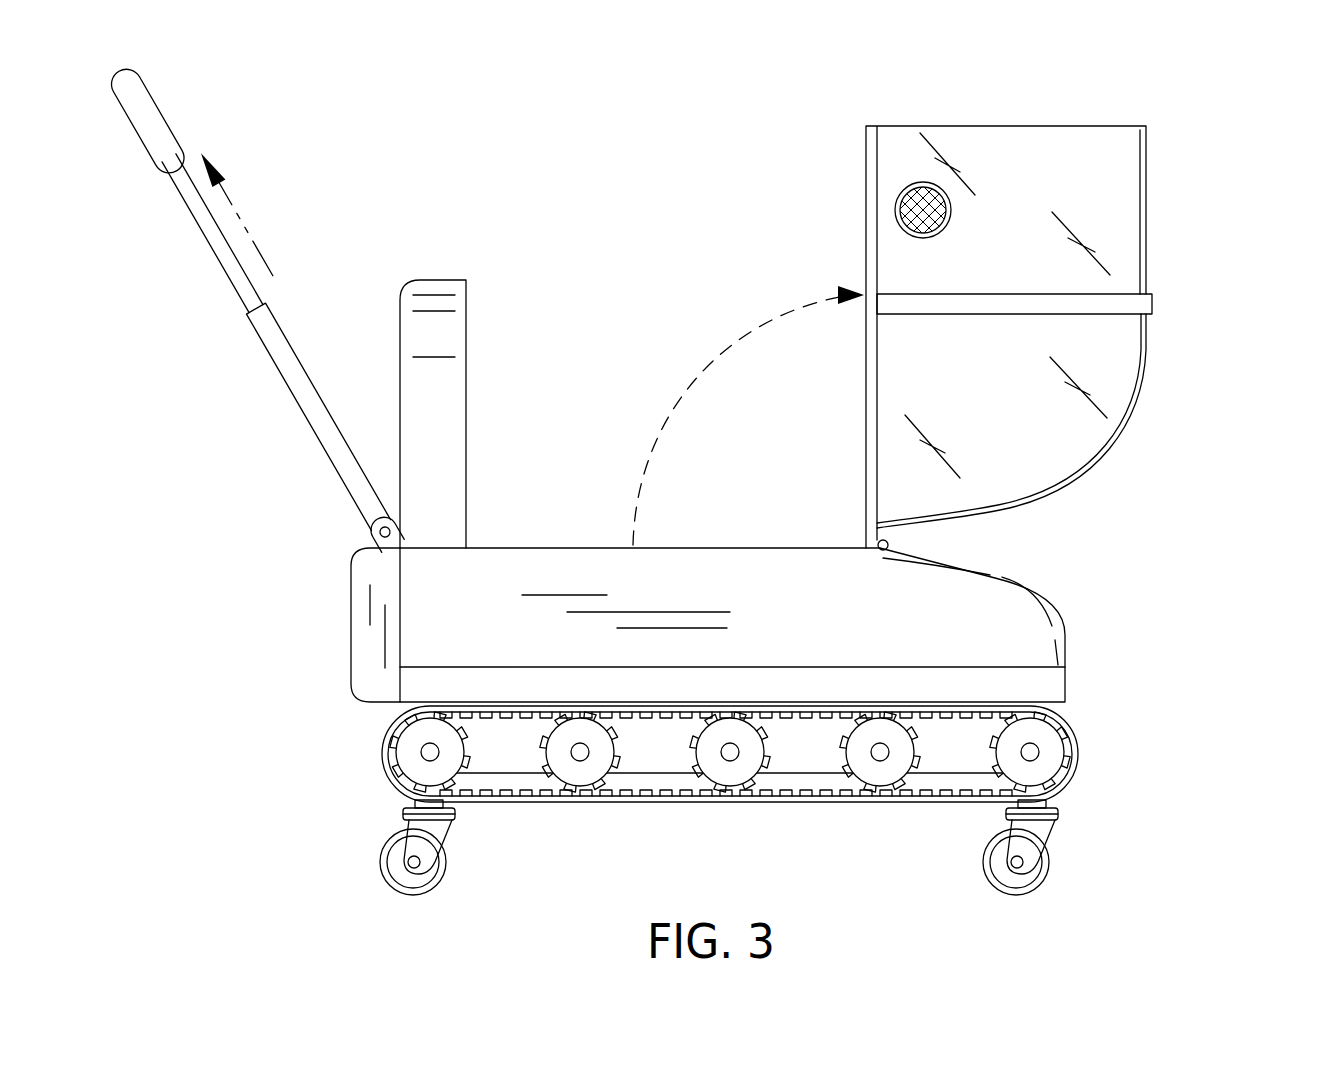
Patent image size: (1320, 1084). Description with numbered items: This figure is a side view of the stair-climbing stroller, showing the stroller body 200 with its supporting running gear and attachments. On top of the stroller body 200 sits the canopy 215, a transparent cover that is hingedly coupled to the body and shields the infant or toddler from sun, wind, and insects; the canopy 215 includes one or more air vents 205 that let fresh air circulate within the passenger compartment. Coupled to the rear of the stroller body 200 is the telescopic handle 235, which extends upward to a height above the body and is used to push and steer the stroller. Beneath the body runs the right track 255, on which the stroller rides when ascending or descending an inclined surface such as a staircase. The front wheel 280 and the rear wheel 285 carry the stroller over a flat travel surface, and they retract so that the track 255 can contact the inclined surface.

The stroller body 200 is at (1052, 589).
The air vent 205 is at (932, 205).
The canopy 215 is at (1113, 367).
The telescopic handle 235 is at (262, 330).
The right track 255 is at (384, 747).
The front wheel 280 is at (1055, 868).
The rear wheel 285 is at (386, 863).